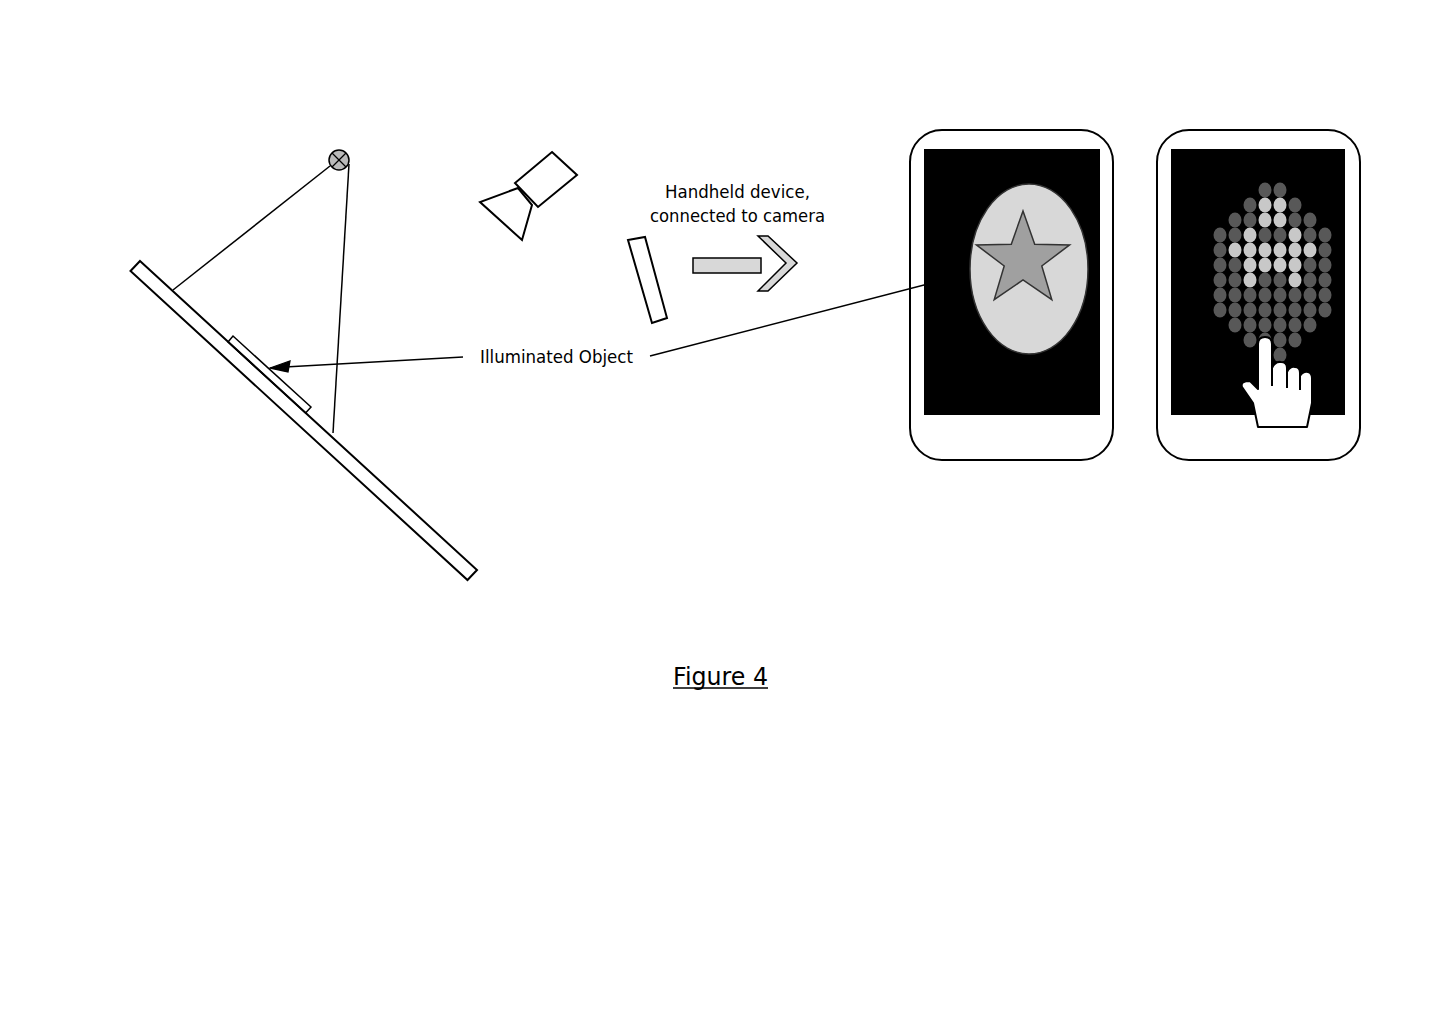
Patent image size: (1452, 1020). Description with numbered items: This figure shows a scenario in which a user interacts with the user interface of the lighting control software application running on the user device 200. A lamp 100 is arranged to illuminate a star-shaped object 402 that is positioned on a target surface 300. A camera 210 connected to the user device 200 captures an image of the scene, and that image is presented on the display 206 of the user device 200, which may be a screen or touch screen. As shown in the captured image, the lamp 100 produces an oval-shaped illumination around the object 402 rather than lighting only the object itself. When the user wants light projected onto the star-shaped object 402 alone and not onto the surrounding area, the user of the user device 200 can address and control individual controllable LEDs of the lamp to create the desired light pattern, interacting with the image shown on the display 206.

The lamp 100 is at (339, 150).
The user device 200 is at (641, 287).
The display 206 is at (926, 398).
The camera 210 is at (552, 151).
The target surface 300 is at (150, 269).
The star-shaped object 402 is at (243, 337).